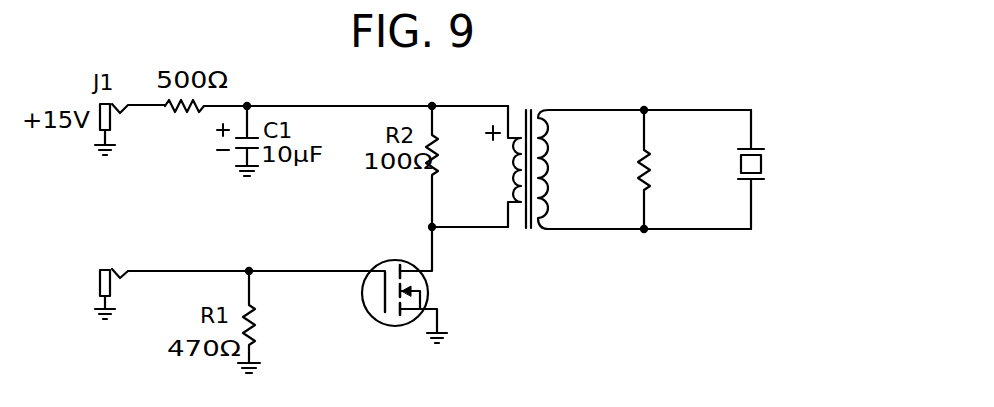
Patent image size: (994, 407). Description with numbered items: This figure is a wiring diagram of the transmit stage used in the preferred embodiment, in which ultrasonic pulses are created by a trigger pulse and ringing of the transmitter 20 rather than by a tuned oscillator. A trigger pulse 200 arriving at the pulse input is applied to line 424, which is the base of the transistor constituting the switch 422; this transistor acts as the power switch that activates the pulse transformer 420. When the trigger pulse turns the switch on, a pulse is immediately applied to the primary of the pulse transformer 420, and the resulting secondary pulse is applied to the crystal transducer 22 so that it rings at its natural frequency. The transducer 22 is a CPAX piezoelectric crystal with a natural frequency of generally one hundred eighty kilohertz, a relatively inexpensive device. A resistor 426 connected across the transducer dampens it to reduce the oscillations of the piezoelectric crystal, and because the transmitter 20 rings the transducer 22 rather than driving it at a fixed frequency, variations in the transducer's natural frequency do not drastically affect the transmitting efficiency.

The transmitter 20 is at (717, 131).
The crystal transducer 22 is at (763, 143).
The trigger pulse 200 is at (164, 272).
The pulse transformer 420 is at (543, 97).
The switch 422 is at (434, 288).
The power switch 424 is at (198, 271).
The resistor 426 is at (651, 165).